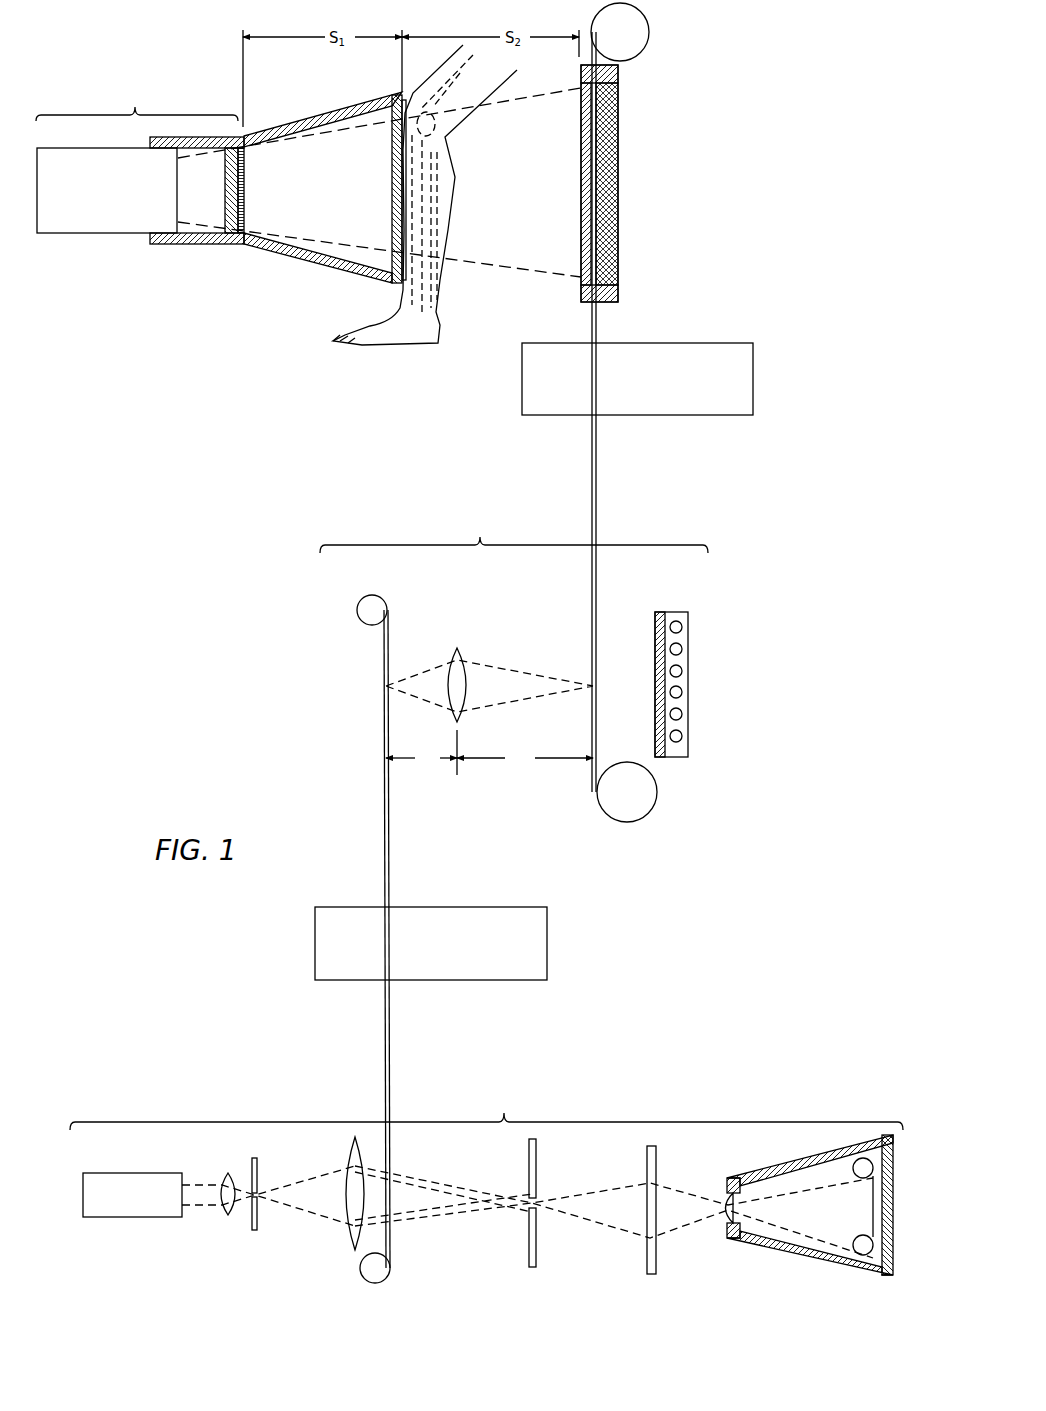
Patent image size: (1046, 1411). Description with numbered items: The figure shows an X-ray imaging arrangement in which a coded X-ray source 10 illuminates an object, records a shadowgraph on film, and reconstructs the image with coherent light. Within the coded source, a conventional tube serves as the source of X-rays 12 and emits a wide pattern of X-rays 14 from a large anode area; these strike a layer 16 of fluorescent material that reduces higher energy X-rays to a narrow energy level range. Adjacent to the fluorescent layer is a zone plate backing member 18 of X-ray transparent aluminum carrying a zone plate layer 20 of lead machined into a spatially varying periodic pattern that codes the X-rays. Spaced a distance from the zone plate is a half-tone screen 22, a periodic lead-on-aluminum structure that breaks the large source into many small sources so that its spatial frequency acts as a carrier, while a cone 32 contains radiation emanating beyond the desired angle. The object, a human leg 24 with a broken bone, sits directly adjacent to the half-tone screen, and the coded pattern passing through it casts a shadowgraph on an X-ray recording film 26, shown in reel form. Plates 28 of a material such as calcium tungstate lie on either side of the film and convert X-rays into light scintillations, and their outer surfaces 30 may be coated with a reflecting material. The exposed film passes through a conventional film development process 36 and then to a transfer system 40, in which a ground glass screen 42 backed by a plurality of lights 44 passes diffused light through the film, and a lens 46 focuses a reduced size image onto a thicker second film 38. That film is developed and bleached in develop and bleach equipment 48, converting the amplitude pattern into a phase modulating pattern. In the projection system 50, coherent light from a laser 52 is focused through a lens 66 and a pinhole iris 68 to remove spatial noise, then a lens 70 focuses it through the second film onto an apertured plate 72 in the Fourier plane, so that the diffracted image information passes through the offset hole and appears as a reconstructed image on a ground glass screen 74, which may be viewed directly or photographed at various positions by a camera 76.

The coded X-ray source 10 is at (137, 100).
The source of X-rays 12 is at (104, 235).
The X-rays 14 is at (190, 245).
The layer of fluorescent material 16 is at (223, 237).
The zone plate backing member 18 is at (243, 240).
The zone plate layer 20 is at (257, 133).
The half-tone screen 22 is at (395, 252).
The human leg 24 is at (437, 218).
The X-ray recording film 26 is at (598, 118).
The plates 28 is at (600, 196).
The surfaces of the plates 30 is at (585, 152).
The cone 32 is at (317, 266).
The film development process 36 is at (752, 380).
The second film 38 is at (388, 668).
The transfer system 40 is at (514, 532).
The ground glass screen 42 is at (657, 637).
The lights 44 is at (683, 694).
The lens 46 is at (462, 668).
The develop and bleach equipment 48 is at (547, 918).
The projection system 50 is at (486, 1110).
The laser 52 is at (135, 1217).
The lens 66 is at (224, 1216).
The pinhole iris 68 is at (257, 1226).
The lens 70 is at (350, 1236).
The apertured plate 72 is at (537, 1238).
The ground glass screen 74 is at (657, 1247).
The camera 76 is at (823, 1258).